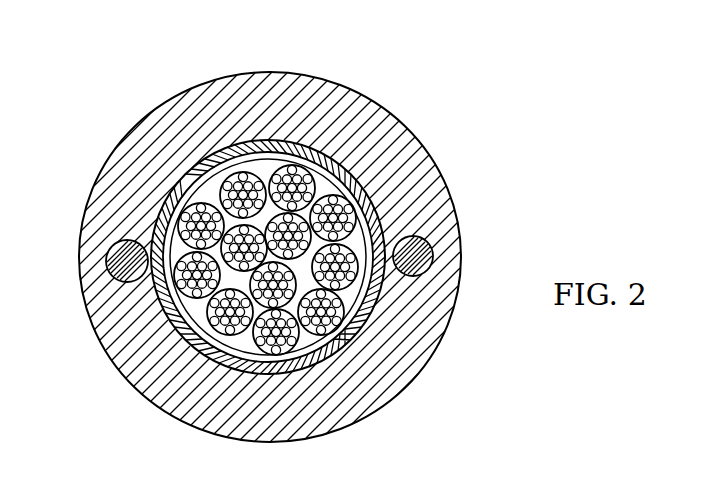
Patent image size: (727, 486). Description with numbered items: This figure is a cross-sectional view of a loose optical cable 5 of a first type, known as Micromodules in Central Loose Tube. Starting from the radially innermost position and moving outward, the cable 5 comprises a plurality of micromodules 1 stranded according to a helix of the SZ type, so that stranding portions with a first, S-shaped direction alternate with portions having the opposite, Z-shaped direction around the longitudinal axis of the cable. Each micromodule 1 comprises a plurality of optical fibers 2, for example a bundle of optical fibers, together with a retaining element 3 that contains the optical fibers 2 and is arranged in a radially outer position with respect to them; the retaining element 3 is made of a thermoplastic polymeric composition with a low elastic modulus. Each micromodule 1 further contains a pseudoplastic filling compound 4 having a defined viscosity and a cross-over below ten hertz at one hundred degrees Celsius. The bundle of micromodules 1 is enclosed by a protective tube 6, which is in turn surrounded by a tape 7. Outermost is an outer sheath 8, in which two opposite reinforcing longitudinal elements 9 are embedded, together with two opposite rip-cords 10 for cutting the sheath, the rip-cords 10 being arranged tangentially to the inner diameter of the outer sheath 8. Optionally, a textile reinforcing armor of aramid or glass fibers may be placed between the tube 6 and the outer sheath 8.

The micromodule 1 is at (380, 111).
The optical fibers 2 is at (316, 174).
The retaining element 3 is at (293, 170).
The pseudoplastic filling compound 4 is at (274, 173).
The optical cable 5 is at (111, 378).
The protective tube 6 is at (362, 332).
The tape 7 is at (332, 345).
The outer sheath 8 is at (132, 148).
The reinforcing longitudinal elements 9 is at (117, 265).
The rip-cords 10 is at (145, 242).